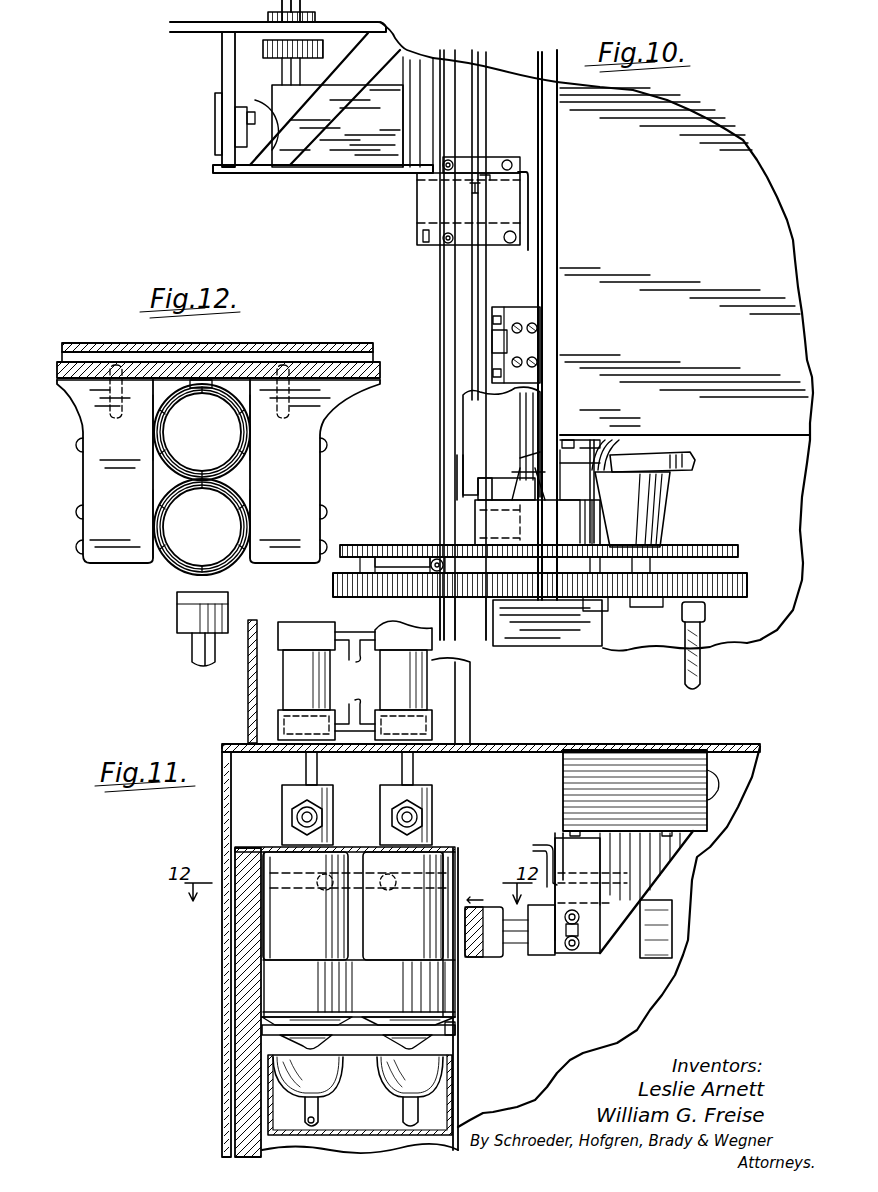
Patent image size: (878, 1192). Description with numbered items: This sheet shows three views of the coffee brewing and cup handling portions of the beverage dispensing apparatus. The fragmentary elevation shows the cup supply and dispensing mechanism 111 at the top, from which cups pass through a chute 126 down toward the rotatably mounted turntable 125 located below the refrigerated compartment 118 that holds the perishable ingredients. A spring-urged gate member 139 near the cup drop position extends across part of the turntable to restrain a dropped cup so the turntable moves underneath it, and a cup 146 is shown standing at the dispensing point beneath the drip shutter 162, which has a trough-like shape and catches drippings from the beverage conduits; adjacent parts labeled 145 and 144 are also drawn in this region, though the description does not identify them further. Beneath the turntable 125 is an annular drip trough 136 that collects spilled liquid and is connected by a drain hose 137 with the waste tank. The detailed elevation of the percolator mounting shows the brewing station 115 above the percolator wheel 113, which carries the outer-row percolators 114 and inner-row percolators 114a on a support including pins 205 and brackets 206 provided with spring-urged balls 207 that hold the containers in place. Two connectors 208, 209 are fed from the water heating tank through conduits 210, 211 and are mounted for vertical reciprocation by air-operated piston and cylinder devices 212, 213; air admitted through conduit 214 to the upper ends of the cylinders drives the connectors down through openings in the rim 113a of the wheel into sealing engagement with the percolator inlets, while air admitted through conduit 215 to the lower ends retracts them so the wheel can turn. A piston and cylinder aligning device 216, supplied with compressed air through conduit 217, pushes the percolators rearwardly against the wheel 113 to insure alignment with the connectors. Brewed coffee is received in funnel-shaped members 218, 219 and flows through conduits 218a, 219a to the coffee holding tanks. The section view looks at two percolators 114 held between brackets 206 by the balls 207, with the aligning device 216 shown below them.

In FIG. 10, the cup supply and dispensing mechanism 111 is at (337, 176).
In FIG. 10, the refrigerated compartment 118 is at (658, 236).
In FIG. 10, the chute 126 is at (473, 413).
In FIG. 10, the guide bracket 145 is at (470, 455).
In FIG. 10, the gate member 139 is at (520, 475).
In FIG. 10, the lever 144 is at (615, 440).
In FIG. 10, the drip shutter 162 is at (685, 472).
In FIG. 10, the cup 146 is at (663, 528).
In FIG. 10, the turntable 125 is at (705, 548).
In FIG. 10, the annular drip trough 136 is at (745, 582).
In FIG. 10, the drain hose 137 is at (702, 660).
In FIG. 12, the percolators 114 is at (167, 428).
In FIG. 11, the percolators 114 is at (460, 858).
In FIG. 12, the brackets 206 is at (151, 474).
In FIG. 11, the brackets 206 is at (357, 886).
In FIG. 12, the spring-urged balls 207 is at (248, 545).
In FIG. 11, the spring-urged balls 207 is at (328, 880).
In FIG. 12, the piston and cylinder aligning device 216 is at (187, 650).
In FIG. 11, the piston and cylinder aligning device 216 is at (620, 960).
In FIG. 11, the air operated piston and cylinder device 213 is at (283, 682).
In FIG. 11, the air operated piston and cylinder device 212 is at (432, 680).
In FIG. 11, the conduit 214 is at (355, 659).
In FIG. 11, the conduit 215 is at (355, 709).
In FIG. 11, the connector 209 is at (328, 806).
In FIG. 11, the brewing station 115 is at (480, 784).
In FIG. 11, the connector 208 is at (433, 802).
In FIG. 11, the conduit 211 is at (318, 826).
In FIG. 11, the conduit 210 is at (423, 818).
In FIG. 11, the percolator supporting rack or wheel 113 is at (237, 862).
In FIG. 11, the rim 113a is at (478, 830).
In FIG. 11, the percolators 114a is at (277, 897).
In FIG. 11, the conduit 217 is at (536, 848).
In FIG. 11, the pins 205 is at (458, 1027).
In FIG. 11, the funnel-shaped member 218 is at (447, 1073).
In FIG. 11, the conduit 218a is at (420, 1107).
In FIG. 11, the funnel-shaped member 219 is at (277, 1068).
In FIG. 11, the conduit 219a is at (307, 1108).